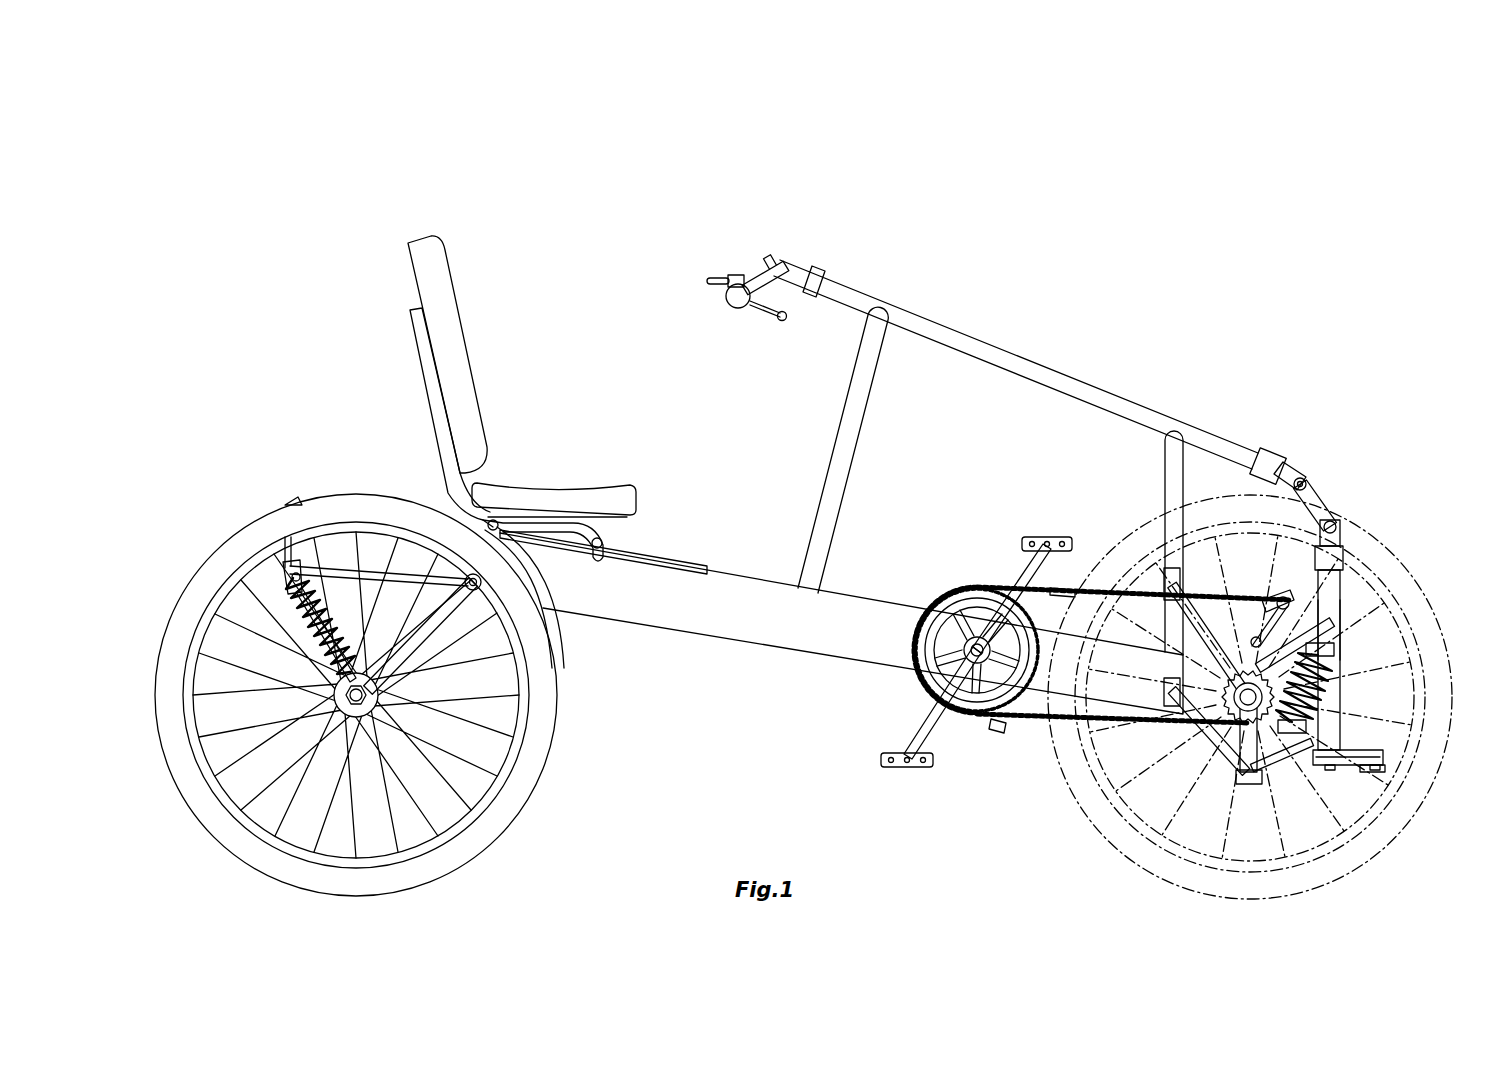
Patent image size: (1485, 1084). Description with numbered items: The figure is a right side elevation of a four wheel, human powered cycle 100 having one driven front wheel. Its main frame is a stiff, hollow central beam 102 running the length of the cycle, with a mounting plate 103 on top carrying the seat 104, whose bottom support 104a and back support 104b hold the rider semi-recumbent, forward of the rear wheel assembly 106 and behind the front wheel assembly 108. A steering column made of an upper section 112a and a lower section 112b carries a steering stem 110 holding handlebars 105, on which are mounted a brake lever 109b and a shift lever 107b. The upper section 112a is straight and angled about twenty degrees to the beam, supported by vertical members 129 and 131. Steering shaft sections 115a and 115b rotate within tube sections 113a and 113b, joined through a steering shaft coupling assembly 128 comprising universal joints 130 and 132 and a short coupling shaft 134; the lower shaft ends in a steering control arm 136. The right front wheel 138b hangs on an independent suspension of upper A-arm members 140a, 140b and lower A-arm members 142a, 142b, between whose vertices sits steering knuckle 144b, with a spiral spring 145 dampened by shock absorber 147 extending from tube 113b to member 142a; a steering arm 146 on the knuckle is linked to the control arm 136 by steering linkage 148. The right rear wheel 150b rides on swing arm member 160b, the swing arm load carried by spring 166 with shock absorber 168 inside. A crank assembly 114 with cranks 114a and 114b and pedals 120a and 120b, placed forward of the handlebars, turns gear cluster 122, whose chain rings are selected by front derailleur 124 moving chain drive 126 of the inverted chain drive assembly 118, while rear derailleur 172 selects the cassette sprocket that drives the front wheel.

The cycle 100 is at (967, 175).
The central beam 102 is at (690, 650).
The seat mounting plate 103 is at (660, 552).
The seat 104 is at (529, 385).
The bottom support 104a is at (552, 487).
The back support 104b is at (450, 310).
The handlebars 105 is at (728, 300).
The rear wheel assembly 106 is at (386, 561).
The lever 107b is at (715, 278).
The front wheel assembly 108 is at (1275, 587).
The lever 109b is at (758, 310).
The steering stem 110 is at (796, 262).
The upper section of steering column 112a is at (1030, 359).
The lower section of steering column 112b is at (1328, 615).
The upper steering tube section 113a is at (980, 335).
The lower steering tube section 113b is at (1340, 585).
The crank assembly 114 is at (950, 662).
The crank 114a is at (975, 575).
The crank 114b is at (905, 725).
The upper section of steering shaft 115a is at (1312, 445).
The lower section of steering shaft 115b is at (1343, 548).
The chain drive assembly 118 is at (1045, 740).
The pedal 120a is at (1037, 547).
The pedal 120b is at (893, 762).
The gear cluster 122 is at (912, 685).
The front derailleur 124 is at (972, 730).
The chain drive 126 is at (1063, 578).
The steering shaft coupling assembly 128 is at (1375, 478).
The vertical member 129 is at (836, 430).
The universal joint 130 is at (1302, 475).
The vertical member 131 is at (1162, 478).
The universal joint 132 is at (1333, 520).
The coupling shaft 134 is at (1318, 492).
The steering control arm 136 is at (1372, 772).
The right front wheel 138b is at (1335, 883).
The upper A-arm member 140a is at (1330, 630).
The upper A-arm member 140b is at (1262, 590).
The lower A-arm member 142a is at (1306, 748).
The lower A-arm member 142b is at (1160, 737).
The steering knuckle 144b is at (1320, 710).
The spring 145 is at (1330, 690).
The steering arm 146 is at (1275, 715).
The shock absorber 147 is at (1338, 665).
The steering linkage 148 is at (1348, 756).
The right rear wheel 150b is at (520, 815).
The swing arm member 160b is at (430, 632).
The spring 166 is at (296, 576).
The shock absorber 168 is at (305, 628).
The rear derailleur 172 is at (1268, 590).